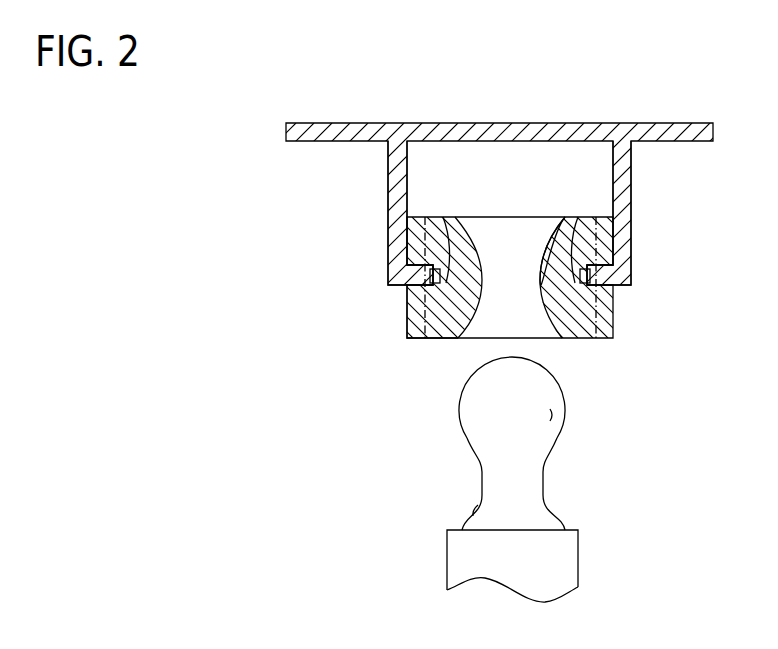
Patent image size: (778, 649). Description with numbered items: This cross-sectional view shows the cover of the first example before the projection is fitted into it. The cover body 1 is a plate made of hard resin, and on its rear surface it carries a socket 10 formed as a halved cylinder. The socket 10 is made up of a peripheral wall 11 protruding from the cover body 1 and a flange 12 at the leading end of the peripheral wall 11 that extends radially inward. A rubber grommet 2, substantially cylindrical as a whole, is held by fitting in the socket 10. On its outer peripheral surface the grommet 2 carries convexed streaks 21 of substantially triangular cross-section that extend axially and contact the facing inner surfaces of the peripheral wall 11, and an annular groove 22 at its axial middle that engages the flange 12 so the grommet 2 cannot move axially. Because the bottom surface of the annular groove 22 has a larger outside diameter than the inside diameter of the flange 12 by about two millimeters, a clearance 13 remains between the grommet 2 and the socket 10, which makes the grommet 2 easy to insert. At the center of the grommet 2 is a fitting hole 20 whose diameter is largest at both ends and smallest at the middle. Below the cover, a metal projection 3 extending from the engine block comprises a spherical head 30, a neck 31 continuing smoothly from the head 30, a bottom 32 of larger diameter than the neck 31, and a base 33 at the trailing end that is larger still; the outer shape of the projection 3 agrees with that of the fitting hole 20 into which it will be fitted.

The cover body 1 is at (676, 127).
The socket 10 is at (447, 184).
The peripheral wall 11 is at (400, 190).
The flange 12 is at (603, 265).
The clearance 13 is at (600, 277).
The grommet 2 is at (510, 253).
The fitting hole 20 is at (512, 338).
The convexed streaks 21 is at (417, 305).
The annular groove 22 is at (443, 213).
The projection 3 is at (537, 479).
The head 30 is at (553, 388).
The neck 31 is at (543, 472).
The bottom 32 is at (563, 512).
The base 33 is at (545, 560).